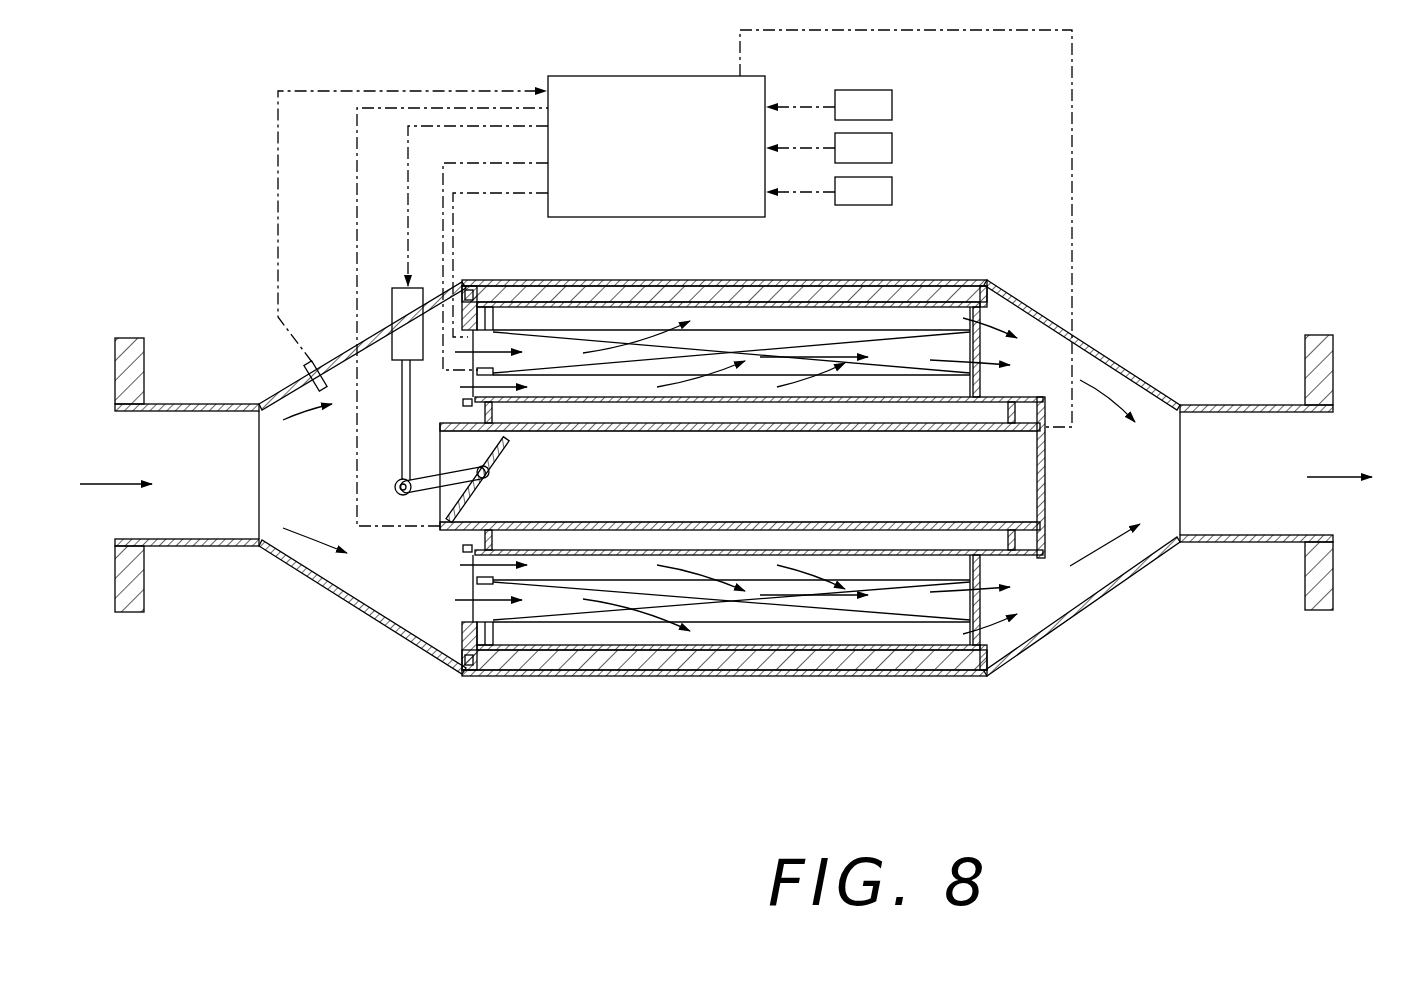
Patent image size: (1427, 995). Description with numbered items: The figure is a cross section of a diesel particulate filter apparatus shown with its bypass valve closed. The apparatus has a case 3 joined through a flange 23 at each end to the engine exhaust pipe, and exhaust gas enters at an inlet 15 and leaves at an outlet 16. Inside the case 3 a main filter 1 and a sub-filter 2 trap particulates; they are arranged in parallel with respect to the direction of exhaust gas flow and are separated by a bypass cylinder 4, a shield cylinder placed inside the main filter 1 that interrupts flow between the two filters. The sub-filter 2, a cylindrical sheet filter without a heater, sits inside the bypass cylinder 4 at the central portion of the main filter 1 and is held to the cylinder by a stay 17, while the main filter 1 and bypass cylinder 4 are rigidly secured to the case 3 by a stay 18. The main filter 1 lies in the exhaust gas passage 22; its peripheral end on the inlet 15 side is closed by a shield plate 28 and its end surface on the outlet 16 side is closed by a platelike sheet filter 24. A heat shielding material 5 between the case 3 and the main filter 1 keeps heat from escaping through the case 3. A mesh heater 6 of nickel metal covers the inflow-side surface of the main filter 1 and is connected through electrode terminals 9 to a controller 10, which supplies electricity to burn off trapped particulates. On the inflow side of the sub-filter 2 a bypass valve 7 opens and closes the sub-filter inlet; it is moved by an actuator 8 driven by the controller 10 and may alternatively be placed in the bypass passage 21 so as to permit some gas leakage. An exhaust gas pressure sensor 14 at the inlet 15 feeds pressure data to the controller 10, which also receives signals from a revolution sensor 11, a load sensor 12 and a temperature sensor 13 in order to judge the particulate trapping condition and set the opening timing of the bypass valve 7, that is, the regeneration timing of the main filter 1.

The main filter 1 is at (898, 362).
The sub-filter 2 is at (798, 432).
The case 3 is at (1105, 352).
The bypass cylinder 4 is at (712, 404).
The heat shielding material 5 is at (790, 296).
The mesh heater 6 is at (882, 358).
The bypass valve 7 is at (492, 474).
The actuator 8 is at (405, 305).
The electrode terminals 9 is at (505, 332).
The controller 10 is at (623, 153).
The revolution sensor 11 is at (885, 105).
The load sensor 12 is at (885, 148).
The temperature sensor 13 is at (885, 190).
The exhaust gas pressure sensor 14 is at (316, 360).
The inlet 15 is at (166, 480).
The outlet 16 is at (1238, 494).
The stay 17 is at (492, 415).
The stay 18 is at (488, 310).
The bypass passage 21 is at (616, 494).
The exhaust gas passage 22 is at (309, 478).
The flange 23 is at (130, 348).
The platelike sheet filter 24 is at (960, 350).
The shield plate 28 is at (467, 290).